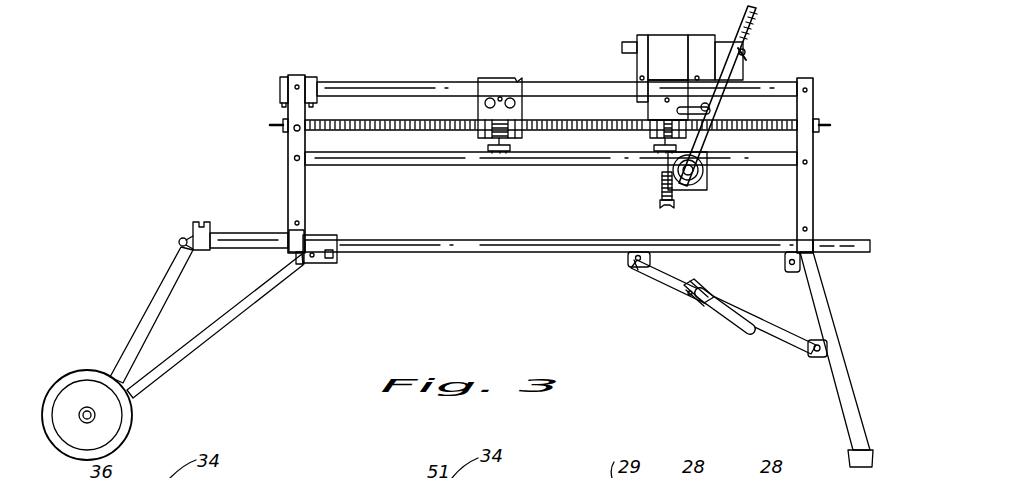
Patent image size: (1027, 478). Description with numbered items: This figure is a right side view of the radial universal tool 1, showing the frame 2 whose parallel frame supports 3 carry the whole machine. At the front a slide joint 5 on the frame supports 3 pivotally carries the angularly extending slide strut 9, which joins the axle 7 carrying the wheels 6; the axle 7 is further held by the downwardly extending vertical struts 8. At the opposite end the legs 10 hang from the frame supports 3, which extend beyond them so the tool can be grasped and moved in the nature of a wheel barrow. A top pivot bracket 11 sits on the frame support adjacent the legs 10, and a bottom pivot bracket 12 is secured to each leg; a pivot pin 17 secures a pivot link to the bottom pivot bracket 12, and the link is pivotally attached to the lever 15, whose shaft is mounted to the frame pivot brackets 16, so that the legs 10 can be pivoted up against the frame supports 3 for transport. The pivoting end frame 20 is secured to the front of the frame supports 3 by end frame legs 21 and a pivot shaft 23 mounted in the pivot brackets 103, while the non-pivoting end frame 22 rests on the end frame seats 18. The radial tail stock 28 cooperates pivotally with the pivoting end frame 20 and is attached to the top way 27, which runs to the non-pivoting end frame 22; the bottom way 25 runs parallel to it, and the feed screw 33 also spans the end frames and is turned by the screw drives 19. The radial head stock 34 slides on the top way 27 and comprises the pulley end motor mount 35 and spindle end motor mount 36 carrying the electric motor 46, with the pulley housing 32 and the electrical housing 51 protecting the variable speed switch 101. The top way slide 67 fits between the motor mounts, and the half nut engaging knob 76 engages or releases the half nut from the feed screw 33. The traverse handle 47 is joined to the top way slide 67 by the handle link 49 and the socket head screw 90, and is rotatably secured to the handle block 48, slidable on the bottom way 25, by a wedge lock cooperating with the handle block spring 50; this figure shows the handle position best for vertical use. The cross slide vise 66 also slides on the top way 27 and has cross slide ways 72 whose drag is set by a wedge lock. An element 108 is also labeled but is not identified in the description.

The radial universal tool 1 is at (212, 125).
The frame 2 is at (511, 264).
The frame supports 3 is at (480, 253).
The slide joint 5 is at (326, 236).
The wheels 6 is at (96, 424).
The axle 7 is at (80, 423).
The vertical struts 8 is at (163, 282).
The slide strut 9 is at (256, 296).
The legs 10 is at (846, 384).
The top pivot bracket 11 is at (788, 270).
The bottom pivot bracket 12 is at (818, 358).
The lever 15 is at (718, 309).
The frame pivot brackets 16 is at (630, 258).
The pivot pin 17 is at (638, 268).
The end frame seats 18 is at (210, 230).
The screw drives 19 is at (270, 125).
The pivoting end frame 20 is at (272, 111).
The end frame legs 21 is at (305, 207).
The non-pivoting end frame 22 is at (852, 208).
The pivot shaft 23 is at (290, 228).
The bottom way 25 is at (514, 162).
The top way 27 is at (400, 88).
The radial tail stock 28 is at (292, 70).
The pulley housing 32 is at (718, 40).
The feed screw 33 is at (582, 133).
The radial head stock 34 is at (688, 108).
The pulley end motor mount 35 is at (696, 36).
The spindle end motor mount 36 is at (643, 33).
The electric motor 46 is at (668, 57).
The traverse handle 47 is at (746, 52).
The handle block 48 is at (707, 176).
The handle link 49 is at (710, 108).
The handle block spring 50 is at (666, 176).
The electrical housing 51 is at (739, 96).
The cross slide vise 66 is at (492, 84).
The top way slide 67 is at (660, 107).
The cross slide ways 72 is at (483, 100).
The half nut engaging knob 76 is at (488, 148).
The socket head screw 90 is at (815, 232).
The variable speed switch 101 is at (744, 58).
The pivot brackets 103 is at (302, 258).
The lock lever handle 108 is at (695, 284).